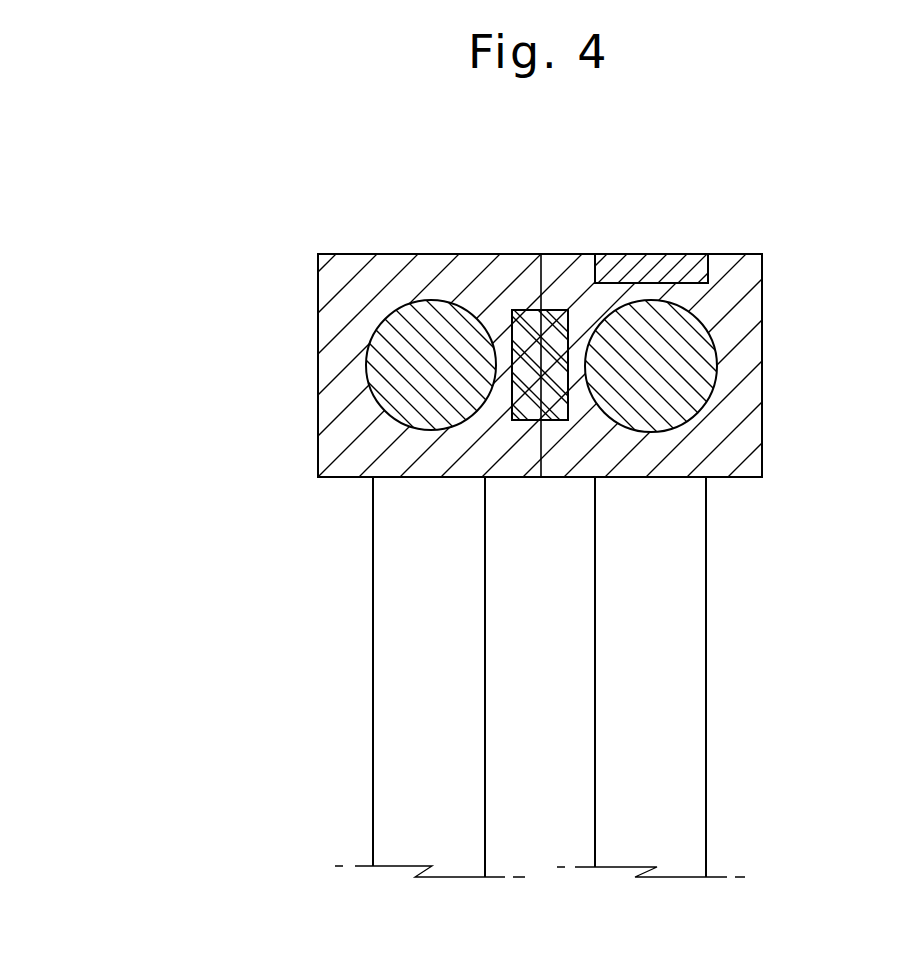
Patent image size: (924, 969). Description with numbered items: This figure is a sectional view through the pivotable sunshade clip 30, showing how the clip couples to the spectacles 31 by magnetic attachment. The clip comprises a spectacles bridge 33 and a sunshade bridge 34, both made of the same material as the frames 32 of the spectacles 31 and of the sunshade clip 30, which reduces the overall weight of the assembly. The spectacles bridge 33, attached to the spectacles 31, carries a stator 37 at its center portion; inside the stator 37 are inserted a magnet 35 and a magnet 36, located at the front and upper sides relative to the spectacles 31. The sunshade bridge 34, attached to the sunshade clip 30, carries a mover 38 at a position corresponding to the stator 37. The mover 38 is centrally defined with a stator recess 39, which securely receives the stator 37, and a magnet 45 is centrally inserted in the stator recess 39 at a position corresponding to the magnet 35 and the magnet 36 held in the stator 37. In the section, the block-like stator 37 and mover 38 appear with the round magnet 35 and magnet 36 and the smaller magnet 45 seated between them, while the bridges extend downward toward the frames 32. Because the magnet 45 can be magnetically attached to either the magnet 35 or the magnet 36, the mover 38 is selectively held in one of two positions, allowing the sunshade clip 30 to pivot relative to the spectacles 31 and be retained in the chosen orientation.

The pivotable sunshade clip 30 is at (277, 637).
The spectacles 31 is at (733, 612).
The frames 32 is at (688, 705).
The spectacles bridge 33 is at (700, 375).
The sunshade bridge 34 is at (370, 383).
The magnet 35 is at (552, 310).
The magnet 36 is at (680, 268).
The stator 37 is at (762, 318).
The mover 38 is at (318, 302).
The stator recess 39 is at (560, 480).
The magnet 45 is at (517, 310).